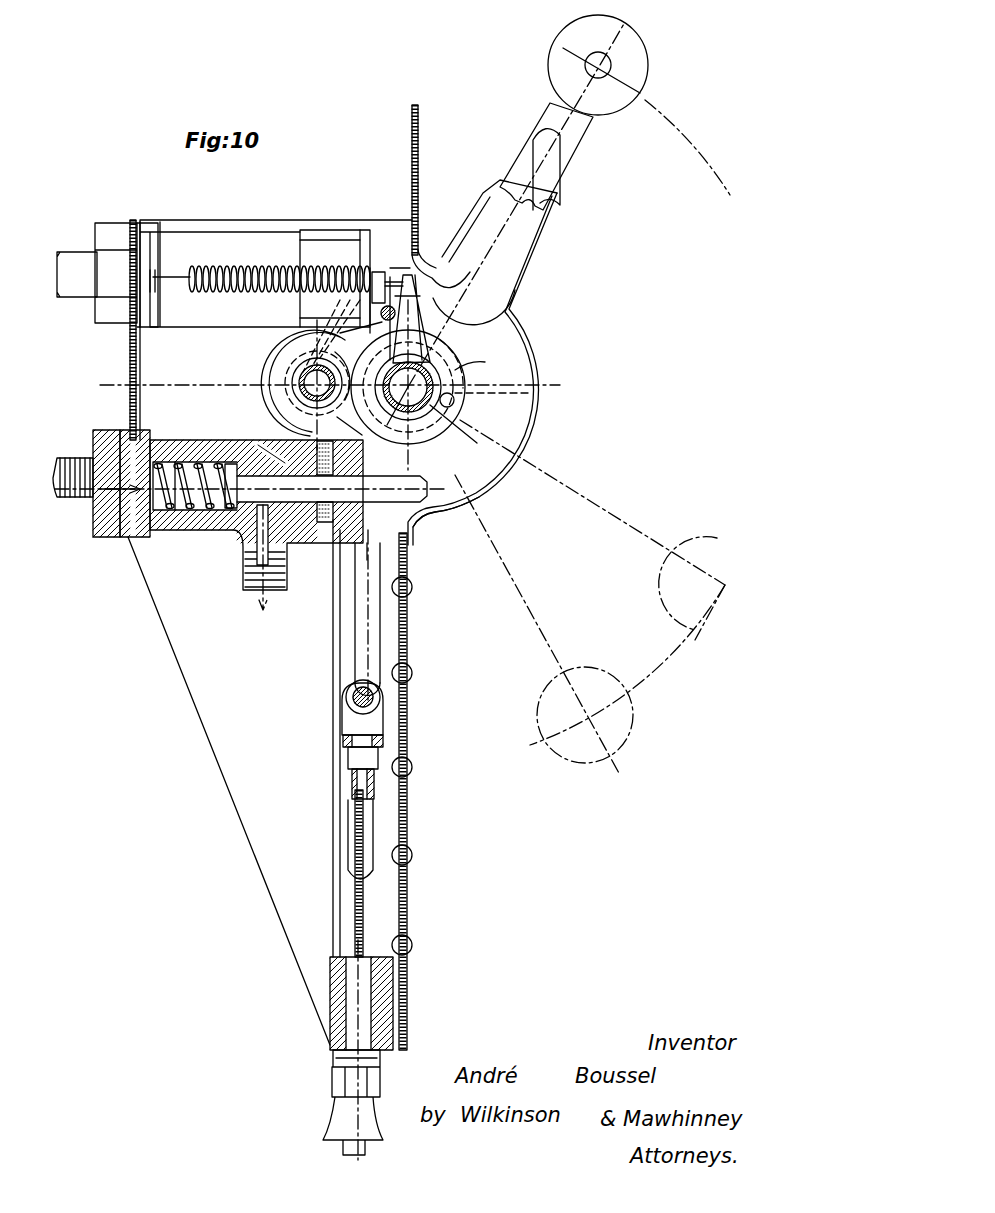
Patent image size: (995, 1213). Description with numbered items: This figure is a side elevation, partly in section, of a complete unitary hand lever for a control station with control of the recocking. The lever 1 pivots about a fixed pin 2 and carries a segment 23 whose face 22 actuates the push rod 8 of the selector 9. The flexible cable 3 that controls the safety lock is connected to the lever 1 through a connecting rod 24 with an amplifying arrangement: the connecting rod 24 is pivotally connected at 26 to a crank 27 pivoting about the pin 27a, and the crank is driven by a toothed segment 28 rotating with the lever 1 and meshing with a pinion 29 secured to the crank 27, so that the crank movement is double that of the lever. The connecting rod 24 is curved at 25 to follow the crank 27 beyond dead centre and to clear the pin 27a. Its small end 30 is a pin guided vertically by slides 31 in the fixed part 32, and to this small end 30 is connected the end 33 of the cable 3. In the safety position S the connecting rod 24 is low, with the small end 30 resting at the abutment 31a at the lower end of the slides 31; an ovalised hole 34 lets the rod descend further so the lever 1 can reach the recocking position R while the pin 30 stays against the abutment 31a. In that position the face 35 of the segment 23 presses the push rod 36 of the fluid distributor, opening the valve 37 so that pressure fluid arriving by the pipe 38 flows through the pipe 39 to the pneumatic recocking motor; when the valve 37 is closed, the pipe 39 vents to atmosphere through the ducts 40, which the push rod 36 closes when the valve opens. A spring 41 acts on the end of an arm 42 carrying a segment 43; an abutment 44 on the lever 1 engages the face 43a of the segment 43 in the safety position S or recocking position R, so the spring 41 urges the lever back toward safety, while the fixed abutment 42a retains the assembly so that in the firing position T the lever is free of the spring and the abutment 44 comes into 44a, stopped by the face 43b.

The lever 1 is at (545, 203).
The fixed pin 2 is at (470, 492).
The flexible cable 3 is at (370, 922).
The push rod 8 is at (376, 272).
The selector 9 is at (283, 240).
The face 22 is at (418, 262).
The segment 23 is at (470, 340).
The connecting rod 24 is at (383, 576).
The curved portion of connecting rod 25 is at (280, 364).
The pivotal connection 26 is at (417, 293).
The crank 27 is at (297, 325).
The pin 27a is at (292, 380).
The toothed segment 28 is at (477, 443).
The pinion 29 is at (285, 400).
The small end 30 is at (378, 700).
The slides 31 is at (380, 825).
The abutment 31a is at (357, 866).
The fixed part 32 is at (394, 888).
The cable end 33 is at (383, 778).
The ovalised hole 34 is at (378, 672).
The face 35 is at (500, 372).
The push rod 36 is at (428, 517).
The valve 37 is at (222, 524).
The pipe 38 is at (105, 482).
The pipe 39 is at (270, 553).
The ducts 40 is at (298, 462).
The spring 41 is at (235, 268).
The arm 42 is at (478, 332).
The fixed abutment 42a is at (395, 296).
The segment 43 is at (470, 420).
The face 43a is at (480, 410).
The face 43b is at (505, 362).
The abutment 44 is at (455, 400).
The firing-position location of abutment 44a is at (455, 394).
The firing position T is at (650, 66).
The recocking position R is at (640, 720).
The safety position S is at (680, 596).